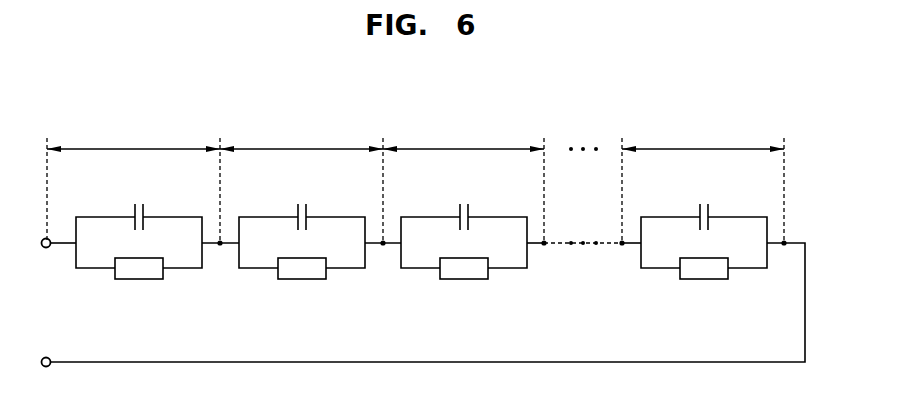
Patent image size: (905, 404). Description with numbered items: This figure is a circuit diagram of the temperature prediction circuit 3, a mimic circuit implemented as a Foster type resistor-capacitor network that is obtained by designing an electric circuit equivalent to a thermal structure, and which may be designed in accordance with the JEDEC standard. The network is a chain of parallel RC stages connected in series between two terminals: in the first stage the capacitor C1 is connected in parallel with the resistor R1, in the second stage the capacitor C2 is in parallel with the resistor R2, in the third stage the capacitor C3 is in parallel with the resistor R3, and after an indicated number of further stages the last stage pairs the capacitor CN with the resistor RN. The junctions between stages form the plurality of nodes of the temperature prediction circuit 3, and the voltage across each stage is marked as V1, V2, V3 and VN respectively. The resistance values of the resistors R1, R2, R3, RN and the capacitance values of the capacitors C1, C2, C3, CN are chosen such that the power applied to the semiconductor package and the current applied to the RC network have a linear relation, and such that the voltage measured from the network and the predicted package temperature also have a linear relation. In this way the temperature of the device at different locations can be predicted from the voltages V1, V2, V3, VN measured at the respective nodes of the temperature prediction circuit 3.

The temperature prediction circuit 3 is at (772, 115).
The node voltage V1 is at (133, 180).
The node voltage V2 is at (301, 180).
The node voltage V3 is at (463, 180).
The node voltage VN is at (703, 180).
The capacitor C1 is at (139, 209).
The capacitor C2 is at (302, 209).
The capacitor C3 is at (464, 209).
The capacitor CN is at (704, 209).
The resistor R1 is at (139, 274).
The resistor R2 is at (302, 274).
The resistor R3 is at (464, 274).
The resistor RN is at (704, 274).